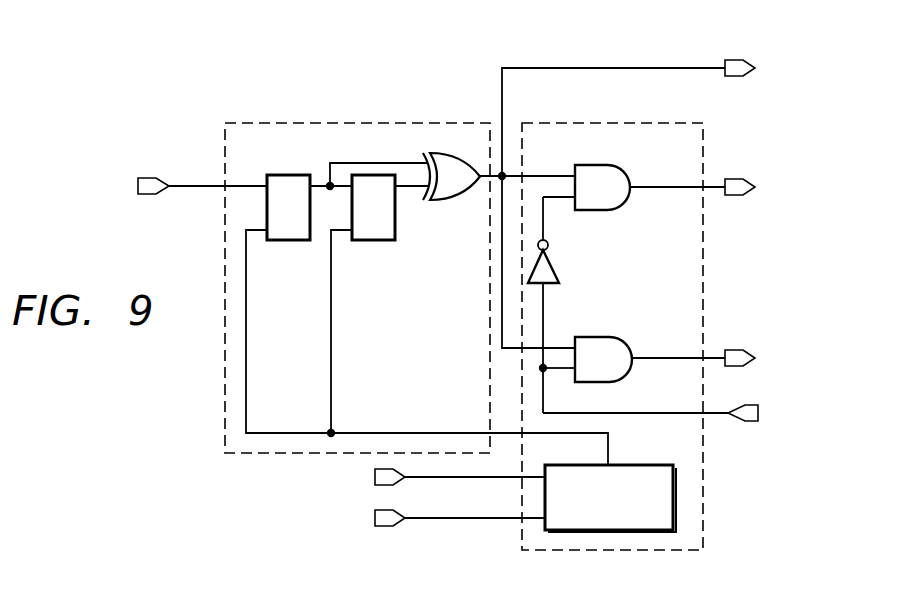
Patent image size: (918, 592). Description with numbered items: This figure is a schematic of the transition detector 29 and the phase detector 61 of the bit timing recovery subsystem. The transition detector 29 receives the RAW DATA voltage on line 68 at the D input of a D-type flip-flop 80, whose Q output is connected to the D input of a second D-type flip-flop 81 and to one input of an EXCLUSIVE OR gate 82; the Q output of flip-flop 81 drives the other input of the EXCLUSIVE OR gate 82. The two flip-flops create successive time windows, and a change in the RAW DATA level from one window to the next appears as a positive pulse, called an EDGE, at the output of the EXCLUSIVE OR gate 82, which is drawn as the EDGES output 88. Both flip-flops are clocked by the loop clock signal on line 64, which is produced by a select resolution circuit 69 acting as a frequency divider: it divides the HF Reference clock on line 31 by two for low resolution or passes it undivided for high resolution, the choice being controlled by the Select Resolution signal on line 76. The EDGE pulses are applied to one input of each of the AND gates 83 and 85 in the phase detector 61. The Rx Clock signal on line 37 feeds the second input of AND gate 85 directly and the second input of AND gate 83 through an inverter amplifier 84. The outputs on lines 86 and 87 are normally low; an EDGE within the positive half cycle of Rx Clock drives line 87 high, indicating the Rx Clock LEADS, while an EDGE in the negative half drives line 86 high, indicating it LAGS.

The transition detector 29 is at (222, 240).
The line 68 is at (150, 177).
The D-type flip-flop 80 is at (290, 241).
The second D-type flip-flop 81 is at (375, 241).
The EXCLUSIVE OR gate 82 is at (445, 201).
The line 64 is at (405, 433).
The phase detector 61 is at (704, 268).
The AND gate 83 is at (627, 203).
The inverter amplifier 84 is at (556, 270).
The AND gate 85 is at (612, 338).
The edges output 88 is at (732, 60).
The line 86 is at (742, 178).
The line 87 is at (742, 350).
The line 37 is at (752, 422).
The select resolution circuit 69 is at (630, 465).
The line 31 is at (405, 480).
The line 76 is at (455, 520).